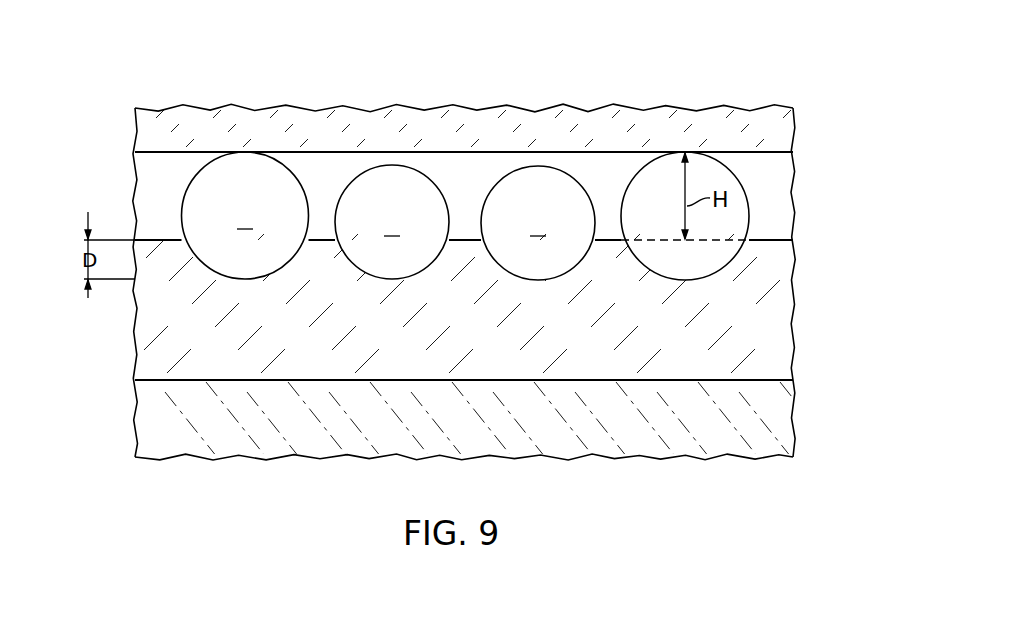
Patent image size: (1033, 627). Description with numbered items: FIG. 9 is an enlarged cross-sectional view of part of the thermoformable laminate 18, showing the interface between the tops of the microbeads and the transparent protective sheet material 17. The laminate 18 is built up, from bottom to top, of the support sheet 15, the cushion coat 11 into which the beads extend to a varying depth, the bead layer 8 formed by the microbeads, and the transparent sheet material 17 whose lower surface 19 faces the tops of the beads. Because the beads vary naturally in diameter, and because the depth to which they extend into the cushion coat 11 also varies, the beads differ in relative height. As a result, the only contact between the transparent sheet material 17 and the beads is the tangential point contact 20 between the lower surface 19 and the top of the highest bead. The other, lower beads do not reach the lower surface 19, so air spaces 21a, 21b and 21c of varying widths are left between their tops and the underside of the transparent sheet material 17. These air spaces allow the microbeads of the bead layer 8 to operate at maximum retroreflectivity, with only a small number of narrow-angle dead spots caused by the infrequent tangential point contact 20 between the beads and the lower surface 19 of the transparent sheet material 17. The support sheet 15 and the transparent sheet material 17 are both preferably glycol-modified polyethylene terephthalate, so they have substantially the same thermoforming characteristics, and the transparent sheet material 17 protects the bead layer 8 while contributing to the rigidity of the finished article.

The thermoformable laminate 18 is at (416, 258).
The transparent sheet material 17 is at (794, 140).
The lower surface 19 is at (172, 153).
The air space 21c is at (245, 152).
The air space 21b is at (392, 165).
The air space 21a is at (538, 166).
The tangential point contact 20 is at (685, 152).
The bead layer 8 is at (799, 186).
The cushion coat 11 is at (794, 304).
The support sheet 15 is at (794, 416).